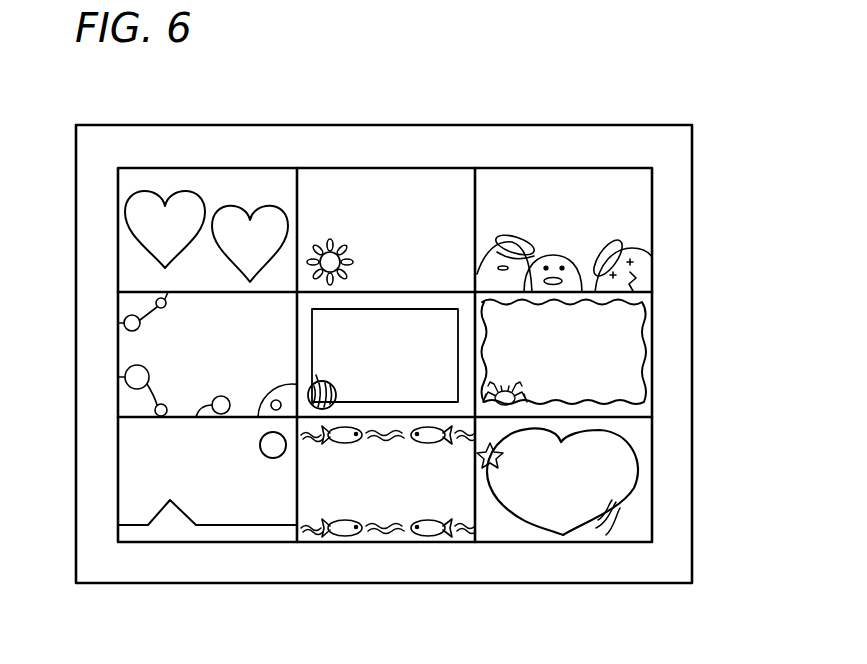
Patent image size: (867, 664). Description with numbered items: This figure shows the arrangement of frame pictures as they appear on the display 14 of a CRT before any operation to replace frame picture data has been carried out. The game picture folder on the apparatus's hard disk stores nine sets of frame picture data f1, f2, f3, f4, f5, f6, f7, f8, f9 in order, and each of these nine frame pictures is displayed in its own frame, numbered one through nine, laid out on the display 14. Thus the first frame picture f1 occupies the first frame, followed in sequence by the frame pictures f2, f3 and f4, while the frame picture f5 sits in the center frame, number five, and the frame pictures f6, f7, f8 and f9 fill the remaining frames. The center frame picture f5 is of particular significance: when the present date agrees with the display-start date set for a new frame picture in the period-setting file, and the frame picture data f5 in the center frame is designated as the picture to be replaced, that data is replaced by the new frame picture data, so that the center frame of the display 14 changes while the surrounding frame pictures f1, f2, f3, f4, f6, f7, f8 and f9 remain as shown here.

The display 14 is at (671, 135).
The frame picture data f1 is at (176, 178).
The frame picture data f2 is at (354, 182).
The frame picture data f3 is at (540, 187).
The frame picture data f4 is at (130, 352).
The frame picture data f5 is at (397, 390).
The frame picture data f6 is at (633, 336).
The frame picture data f7 is at (217, 513).
The frame picture data f8 is at (367, 508).
The frame picture data f9 is at (625, 460).